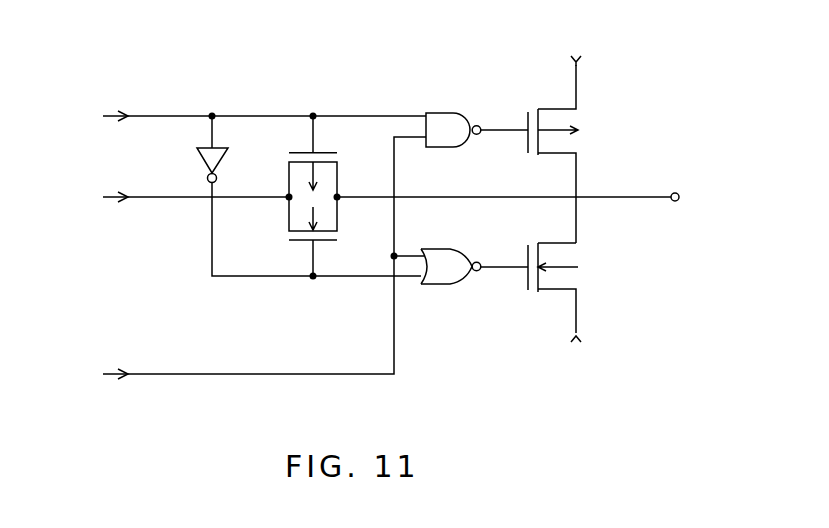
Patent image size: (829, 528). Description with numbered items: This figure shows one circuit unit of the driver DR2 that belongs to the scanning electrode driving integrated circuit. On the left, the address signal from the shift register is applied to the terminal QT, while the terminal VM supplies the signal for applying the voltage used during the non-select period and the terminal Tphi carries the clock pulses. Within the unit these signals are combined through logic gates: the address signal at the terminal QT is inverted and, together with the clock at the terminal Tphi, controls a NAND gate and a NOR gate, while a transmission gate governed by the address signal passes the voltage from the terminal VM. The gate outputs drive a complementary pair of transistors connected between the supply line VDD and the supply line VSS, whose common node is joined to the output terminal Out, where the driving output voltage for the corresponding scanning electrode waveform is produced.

The terminal QT is at (242, 118).
The terminal VM is at (173, 199).
The terminal Tφ Tphi is at (246, 261).
The VDD supply VDD is at (574, 48).
The VSS supply VSS is at (574, 352).
The output terminal OUT Out is at (683, 215).